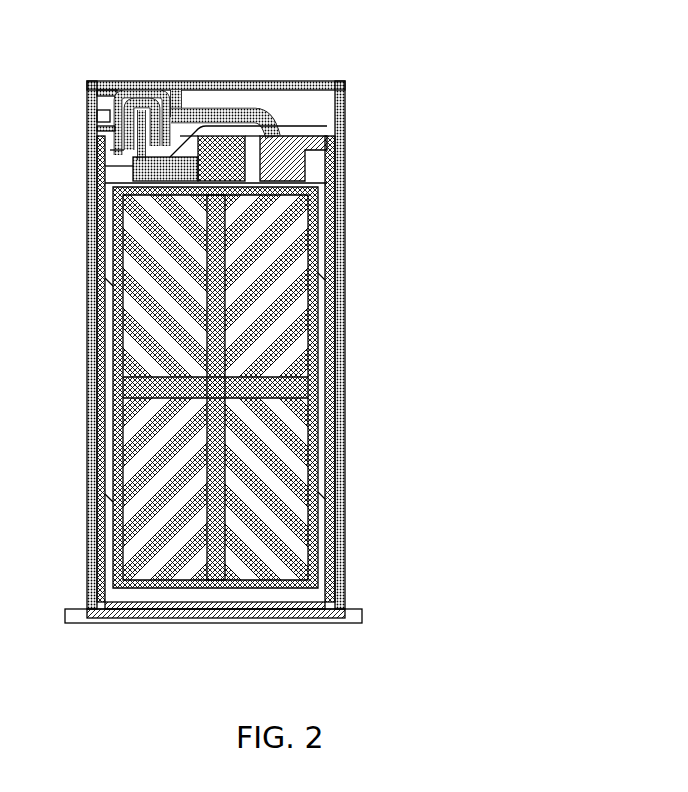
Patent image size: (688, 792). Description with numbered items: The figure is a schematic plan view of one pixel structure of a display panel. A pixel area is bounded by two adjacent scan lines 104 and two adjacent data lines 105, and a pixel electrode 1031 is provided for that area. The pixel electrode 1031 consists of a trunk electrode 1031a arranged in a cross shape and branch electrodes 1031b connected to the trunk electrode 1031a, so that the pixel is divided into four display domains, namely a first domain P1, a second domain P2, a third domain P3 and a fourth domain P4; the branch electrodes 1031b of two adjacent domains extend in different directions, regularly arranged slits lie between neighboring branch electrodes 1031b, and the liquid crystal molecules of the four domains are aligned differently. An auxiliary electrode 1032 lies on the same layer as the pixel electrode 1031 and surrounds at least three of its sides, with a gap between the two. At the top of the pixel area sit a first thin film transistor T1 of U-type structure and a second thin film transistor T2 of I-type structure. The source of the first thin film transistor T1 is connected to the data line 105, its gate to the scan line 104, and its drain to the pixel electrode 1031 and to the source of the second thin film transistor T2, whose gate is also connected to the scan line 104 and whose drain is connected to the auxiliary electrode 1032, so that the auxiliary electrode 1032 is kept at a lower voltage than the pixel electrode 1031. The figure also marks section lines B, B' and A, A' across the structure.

The data line 105 is at (87, 536).
The scan line 104 is at (362, 615).
The auxiliary electrode 1032 is at (334, 332).
The pixel electrode 1031 is at (329, 387).
The trunk electrode 1031a is at (313, 378).
The branch electrode 1031b is at (310, 440).
The first thin film transistor T1 is at (141, 83).
The second thin film transistor T2 is at (178, 86).
The first domain P1 is at (106, 281).
The second domain P2 is at (322, 277).
The third domain P3 is at (106, 497).
The fourth domain P4 is at (322, 496).
The section line B is at (214, 214).
The section line B' is at (414, 214).
The section line A is at (300, 617).
The section line A' is at (355, 617).